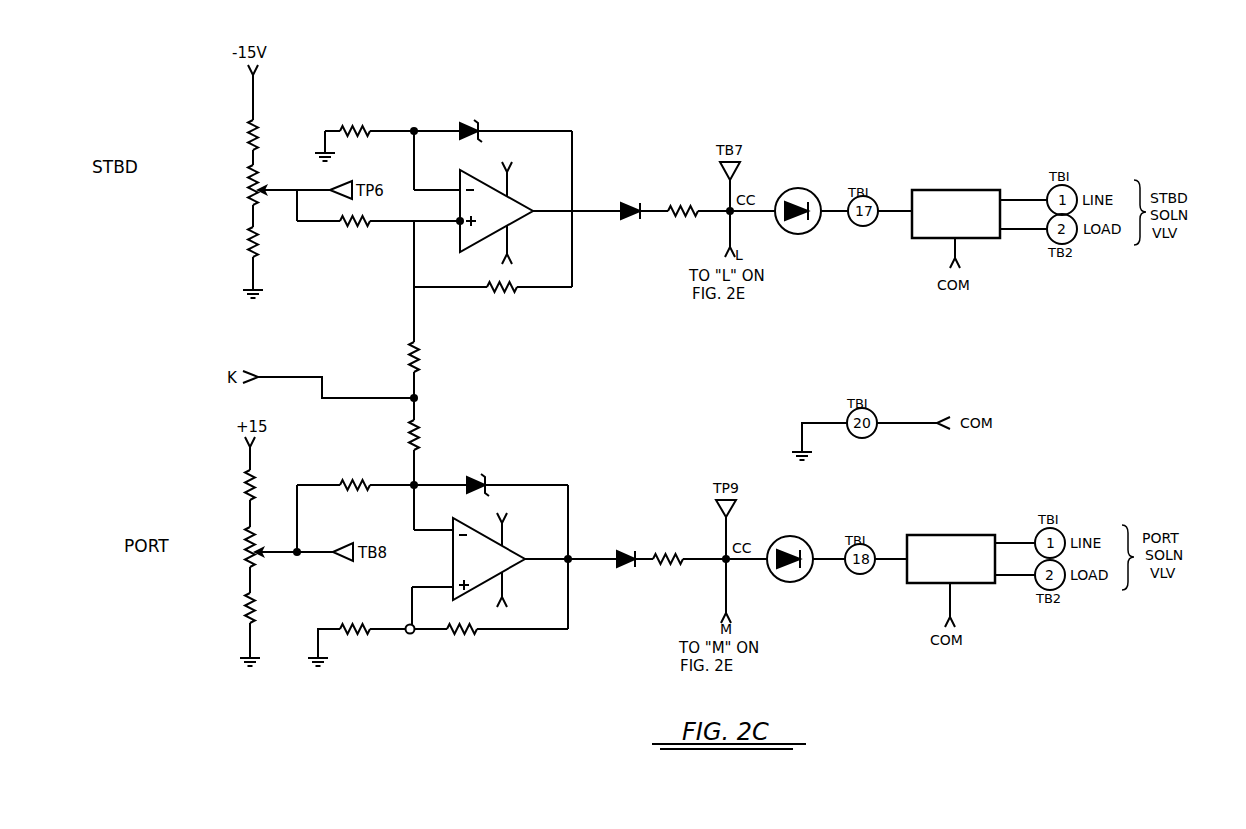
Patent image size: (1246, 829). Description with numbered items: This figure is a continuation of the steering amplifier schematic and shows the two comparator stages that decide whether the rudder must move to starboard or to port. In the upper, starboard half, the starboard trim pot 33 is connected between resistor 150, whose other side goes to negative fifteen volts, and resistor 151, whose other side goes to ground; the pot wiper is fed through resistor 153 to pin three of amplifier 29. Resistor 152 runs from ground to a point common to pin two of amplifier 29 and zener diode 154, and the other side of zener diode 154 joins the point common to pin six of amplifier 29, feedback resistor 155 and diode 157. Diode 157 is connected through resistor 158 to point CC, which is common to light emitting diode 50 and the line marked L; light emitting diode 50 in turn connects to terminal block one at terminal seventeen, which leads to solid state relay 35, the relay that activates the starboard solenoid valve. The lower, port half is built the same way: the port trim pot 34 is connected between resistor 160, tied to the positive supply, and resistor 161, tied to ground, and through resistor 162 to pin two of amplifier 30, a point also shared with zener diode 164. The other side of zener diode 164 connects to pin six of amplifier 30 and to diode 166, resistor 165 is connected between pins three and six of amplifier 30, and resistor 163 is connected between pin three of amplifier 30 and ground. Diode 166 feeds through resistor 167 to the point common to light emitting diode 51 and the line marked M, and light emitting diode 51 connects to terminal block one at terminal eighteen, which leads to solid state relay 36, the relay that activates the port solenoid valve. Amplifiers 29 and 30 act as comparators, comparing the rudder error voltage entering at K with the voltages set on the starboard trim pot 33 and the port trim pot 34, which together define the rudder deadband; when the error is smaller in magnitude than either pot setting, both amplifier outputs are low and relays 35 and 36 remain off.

The amplifier 29 is at (470, 253).
The amplifier 30 is at (458, 601).
The starboard trim pot 33 is at (249, 180).
The port trim pot 34 is at (247, 544).
The solid state relay 35 is at (948, 190).
The solid state relay 36 is at (930, 535).
The light emitting diode 50 is at (810, 193).
The light emitting diode 51 is at (802, 538).
The resistor 150 is at (262, 122).
The resistor 151 is at (248, 229).
The resistor 152 is at (355, 127).
The resistor 153 is at (366, 226).
The zener diode 154 is at (482, 128).
The resistor 155 is at (505, 292).
The diode 157 is at (629, 202).
The resistor 158 is at (670, 218).
The resistor 160 is at (258, 482).
The resistor 161 is at (246, 605).
The resistor 162 is at (344, 480).
The resistor 163 is at (344, 624).
The zener diode 164 is at (490, 482).
The resistor 165 is at (477, 636).
The diode 166 is at (624, 552).
The resistor 167 is at (660, 567).